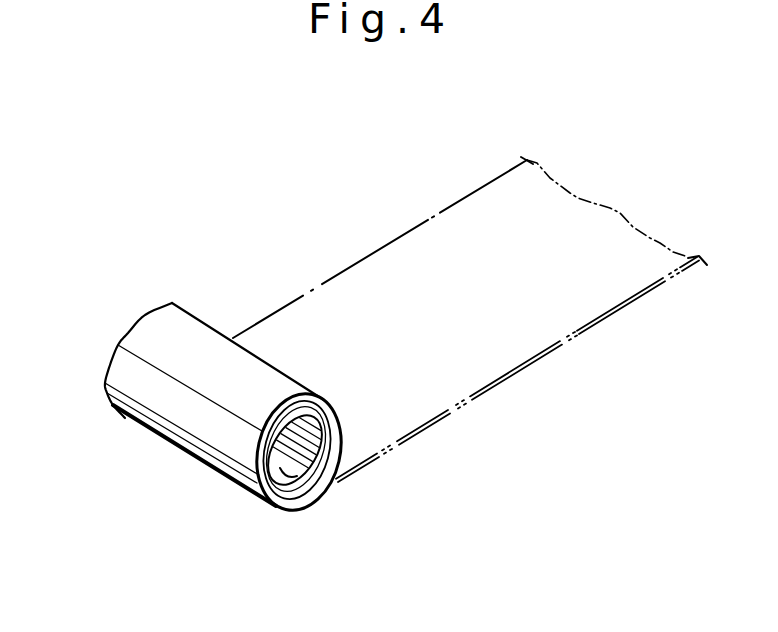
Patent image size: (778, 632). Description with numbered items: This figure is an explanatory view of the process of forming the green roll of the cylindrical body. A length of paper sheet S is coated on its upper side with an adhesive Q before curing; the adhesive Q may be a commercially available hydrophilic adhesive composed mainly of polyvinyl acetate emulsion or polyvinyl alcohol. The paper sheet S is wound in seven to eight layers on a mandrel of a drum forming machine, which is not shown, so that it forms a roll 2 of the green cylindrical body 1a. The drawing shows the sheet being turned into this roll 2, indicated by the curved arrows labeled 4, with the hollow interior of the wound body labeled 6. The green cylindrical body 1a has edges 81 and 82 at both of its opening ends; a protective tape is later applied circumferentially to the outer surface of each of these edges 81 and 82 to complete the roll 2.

The green cylindrical body 1a is at (187, 287).
The edge 82 is at (143, 313).
The roll 2 is at (165, 437).
The hollow core 6 is at (290, 473).
The edge 81 is at (288, 481).
The rolling direction 4 is at (118, 300).
The paper sheet S is at (381, 247).
The adhesive Q is at (557, 240).